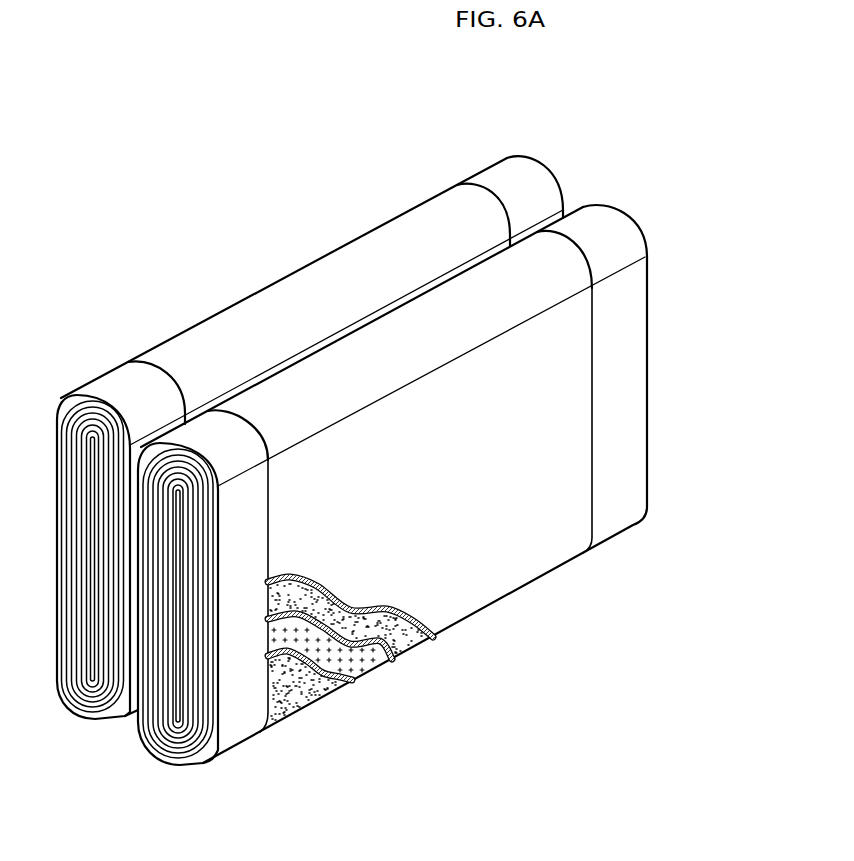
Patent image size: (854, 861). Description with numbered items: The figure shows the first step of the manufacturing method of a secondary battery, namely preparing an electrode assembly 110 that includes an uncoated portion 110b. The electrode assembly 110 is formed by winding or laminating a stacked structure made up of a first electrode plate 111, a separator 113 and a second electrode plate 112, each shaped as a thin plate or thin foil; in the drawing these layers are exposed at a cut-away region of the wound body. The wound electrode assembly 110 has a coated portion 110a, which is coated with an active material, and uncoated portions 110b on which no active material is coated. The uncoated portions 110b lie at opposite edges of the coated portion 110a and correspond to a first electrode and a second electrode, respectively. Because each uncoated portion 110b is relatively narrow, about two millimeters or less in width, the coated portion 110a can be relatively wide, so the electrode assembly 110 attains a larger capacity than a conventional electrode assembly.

The electrode assembly 110 is at (640, 199).
The coated portion 110a is at (513, 566).
The uncoated portion 110b is at (233, 730).
The first electrode plate 111 is at (302, 695).
The second electrode plate 112 is at (405, 638).
The separator 113 is at (367, 665).